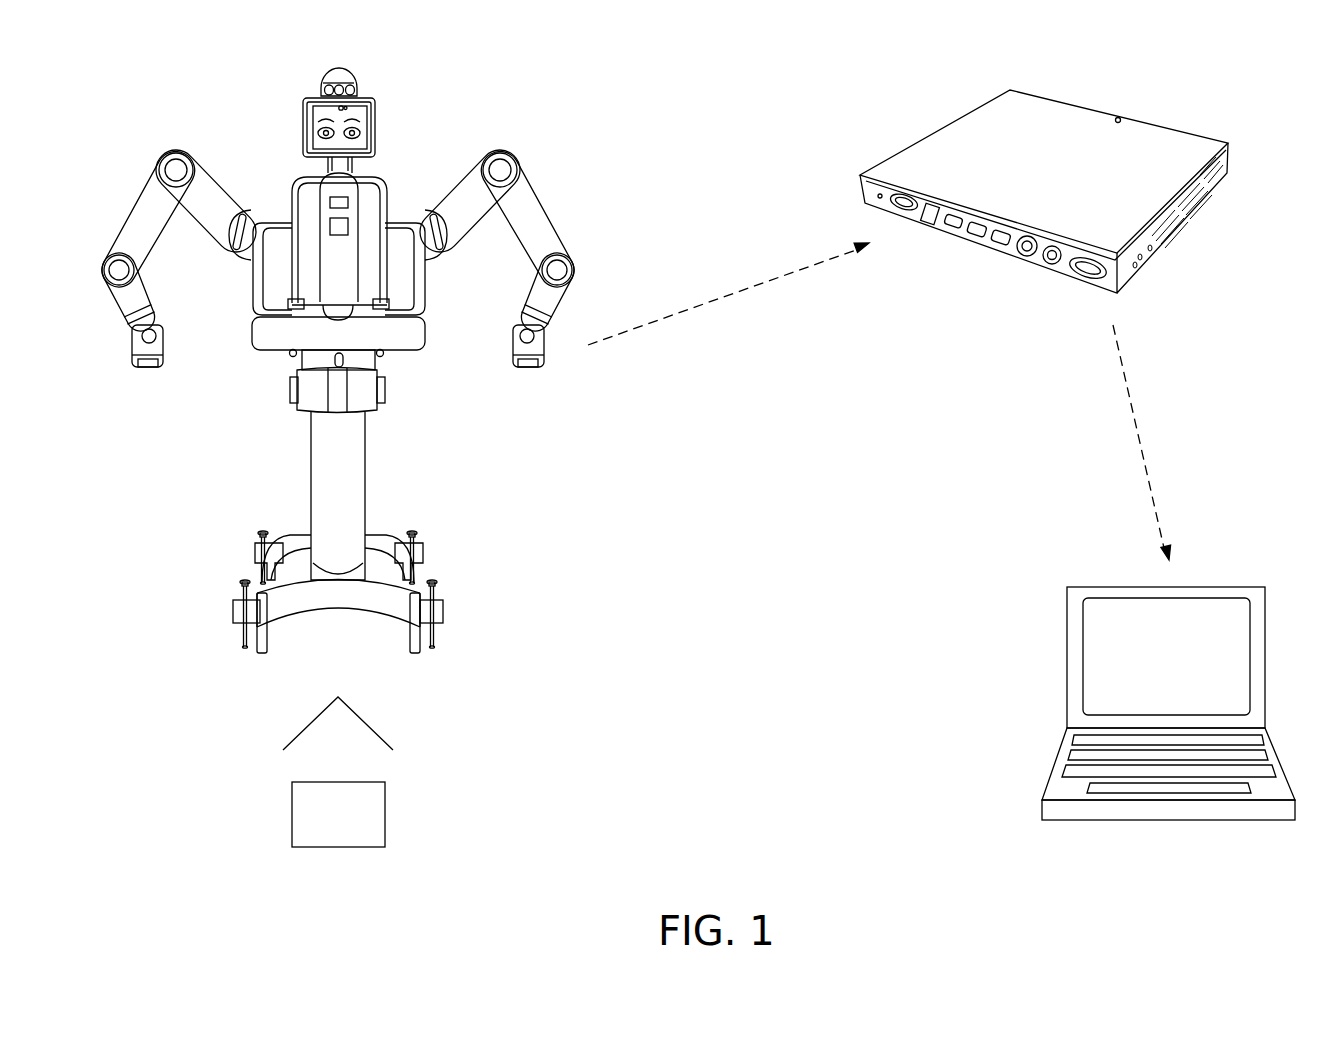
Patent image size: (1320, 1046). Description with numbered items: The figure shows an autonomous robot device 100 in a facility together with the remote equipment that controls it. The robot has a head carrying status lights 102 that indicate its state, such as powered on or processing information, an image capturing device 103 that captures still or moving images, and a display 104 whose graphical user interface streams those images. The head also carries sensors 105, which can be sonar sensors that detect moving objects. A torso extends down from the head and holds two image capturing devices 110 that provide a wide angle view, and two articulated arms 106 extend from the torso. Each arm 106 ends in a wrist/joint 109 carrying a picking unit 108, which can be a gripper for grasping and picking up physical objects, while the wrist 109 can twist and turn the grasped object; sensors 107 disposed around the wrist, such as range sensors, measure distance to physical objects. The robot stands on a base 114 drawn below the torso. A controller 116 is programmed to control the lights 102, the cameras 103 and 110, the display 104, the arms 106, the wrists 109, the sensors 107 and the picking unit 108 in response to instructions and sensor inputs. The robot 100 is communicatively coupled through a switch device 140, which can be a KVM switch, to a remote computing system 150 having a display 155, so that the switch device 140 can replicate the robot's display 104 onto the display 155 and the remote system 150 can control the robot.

The autonomous robot device 100 is at (546, 662).
The status lights 102 is at (362, 93).
The image capturing device 103 is at (343, 108).
The display 104 is at (358, 130).
The sensors 105 is at (323, 78).
The articulated arms 106 is at (565, 270).
The sensors and/or image capturing devices 107 is at (540, 330).
The picking unit 108 is at (532, 367).
The wrist/joint 109 is at (518, 333).
The image capturing devices 110 is at (328, 203).
The base 114 is at (240, 613).
The controller 116 is at (338, 772).
The switch device 140 is at (1188, 145).
The remote computing system 150 is at (1225, 587).
The display 155 is at (1105, 640).